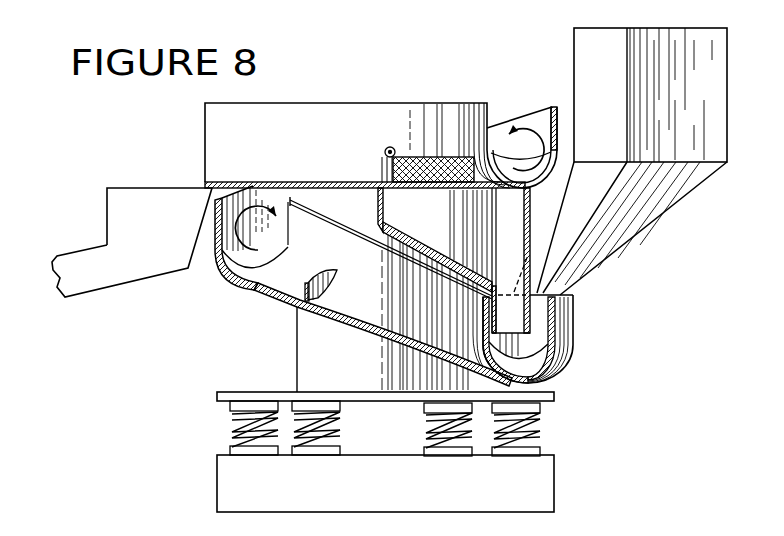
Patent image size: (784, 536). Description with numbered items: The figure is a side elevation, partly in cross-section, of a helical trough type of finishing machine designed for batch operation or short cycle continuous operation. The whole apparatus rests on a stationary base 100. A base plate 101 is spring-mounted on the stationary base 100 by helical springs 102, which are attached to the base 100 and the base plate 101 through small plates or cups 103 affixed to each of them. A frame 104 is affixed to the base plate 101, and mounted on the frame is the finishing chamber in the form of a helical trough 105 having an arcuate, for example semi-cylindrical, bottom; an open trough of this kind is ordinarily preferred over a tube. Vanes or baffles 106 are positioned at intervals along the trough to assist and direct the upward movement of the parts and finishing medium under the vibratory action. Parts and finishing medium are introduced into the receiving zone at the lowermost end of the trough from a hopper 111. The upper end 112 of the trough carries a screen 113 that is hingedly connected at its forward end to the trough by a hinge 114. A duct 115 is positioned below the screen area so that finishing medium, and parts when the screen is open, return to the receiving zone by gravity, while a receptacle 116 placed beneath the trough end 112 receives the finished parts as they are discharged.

The stationary base 100 is at (360, 489).
The base plate 101 is at (221, 392).
The helical springs 102 is at (230, 424).
The small plates or cups 103 is at (245, 453).
The frame 104 is at (297, 348).
The helical trough 105 is at (236, 290).
The vanes or baffles 106 is at (227, 262).
The hopper 111 is at (720, 124).
The upper end of the trough 112 is at (398, 100).
The screen 113 is at (420, 158).
The hinge 114 is at (386, 148).
The duct 115 is at (455, 230).
The receptacle 116 is at (77, 258).